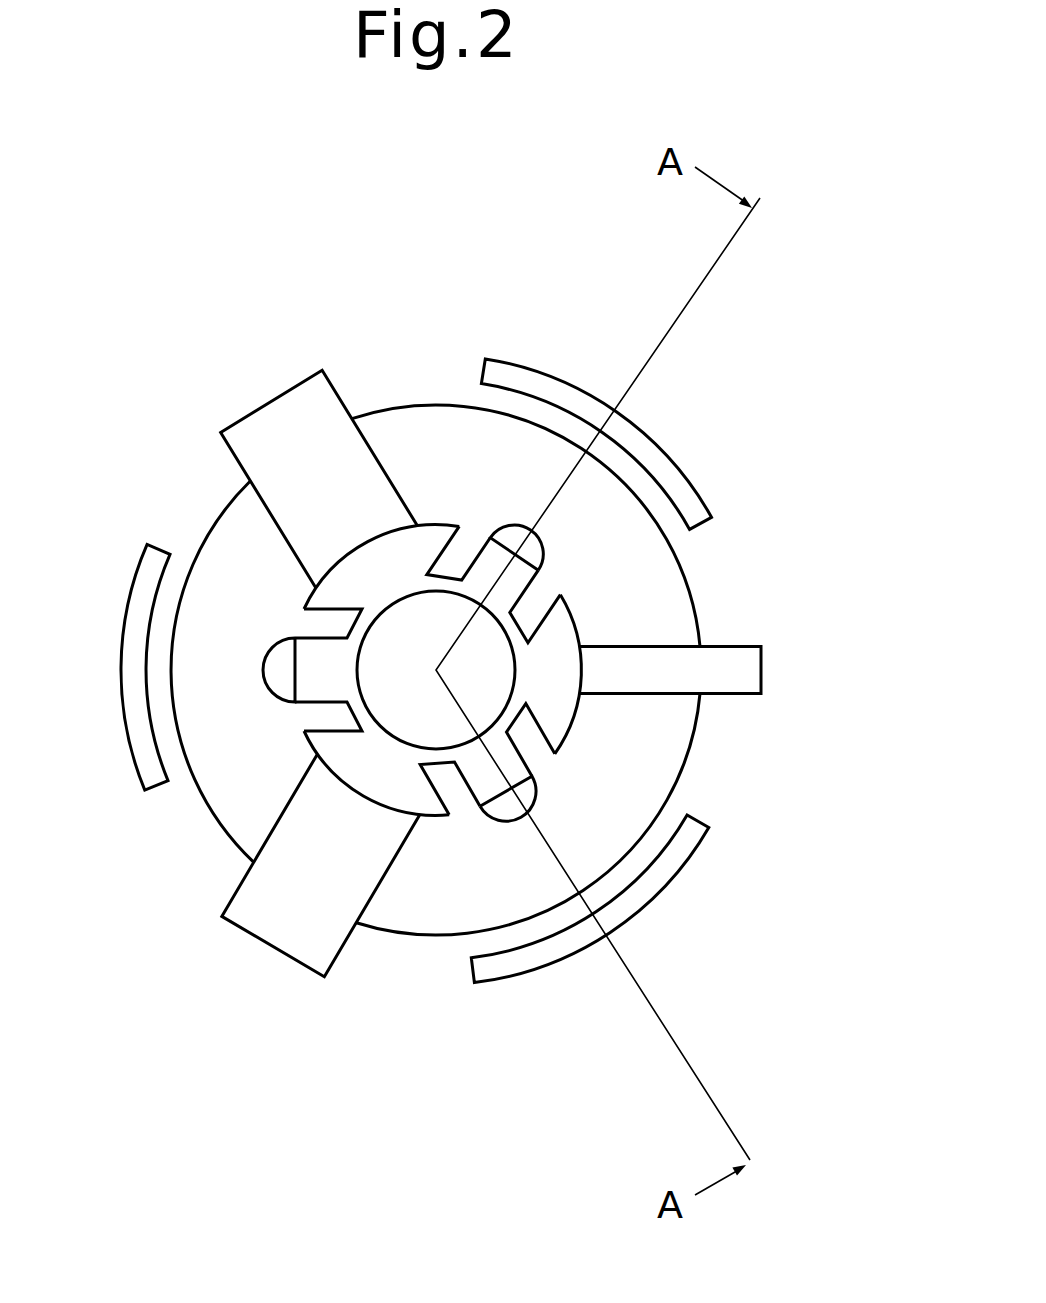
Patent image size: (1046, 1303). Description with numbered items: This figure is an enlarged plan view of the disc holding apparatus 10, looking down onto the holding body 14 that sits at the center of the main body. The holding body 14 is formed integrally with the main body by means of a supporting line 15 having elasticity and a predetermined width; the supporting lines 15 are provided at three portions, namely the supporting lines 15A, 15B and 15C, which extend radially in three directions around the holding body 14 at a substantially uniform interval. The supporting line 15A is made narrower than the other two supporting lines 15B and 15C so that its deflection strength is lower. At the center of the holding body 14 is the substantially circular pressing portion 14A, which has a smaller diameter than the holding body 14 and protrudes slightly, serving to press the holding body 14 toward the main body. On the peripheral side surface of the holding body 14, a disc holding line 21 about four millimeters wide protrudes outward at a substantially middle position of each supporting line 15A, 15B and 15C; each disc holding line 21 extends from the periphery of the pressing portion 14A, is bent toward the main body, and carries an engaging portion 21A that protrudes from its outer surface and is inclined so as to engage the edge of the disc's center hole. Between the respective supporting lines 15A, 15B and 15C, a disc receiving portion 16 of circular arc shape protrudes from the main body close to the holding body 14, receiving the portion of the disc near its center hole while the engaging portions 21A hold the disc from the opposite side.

The disc holding apparatus 10 is at (372, 285).
The holding body 14 is at (500, 604).
The pressing portion 14A is at (497, 677).
The supporting line 15 is at (226, 392).
The supporting line 15A is at (705, 692).
The supporting line 15B is at (338, 382).
The supporting line 15C is at (343, 953).
The disc receiving portion 16 is at (640, 428).
The disc holding line 21 is at (480, 553).
The engaging portion 21A is at (275, 645).